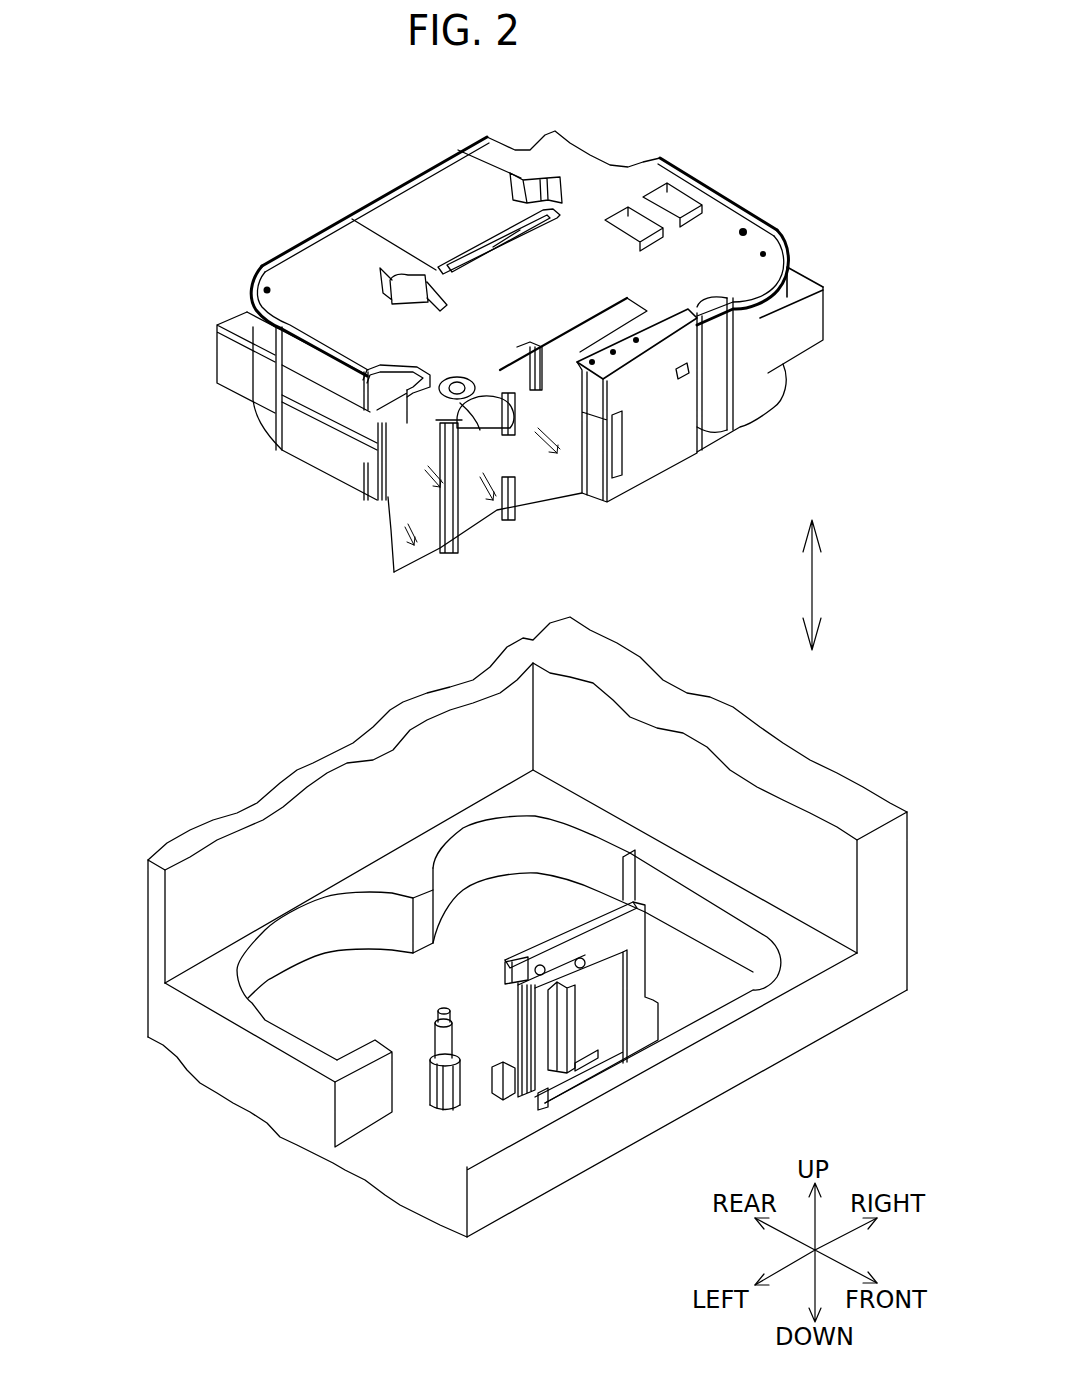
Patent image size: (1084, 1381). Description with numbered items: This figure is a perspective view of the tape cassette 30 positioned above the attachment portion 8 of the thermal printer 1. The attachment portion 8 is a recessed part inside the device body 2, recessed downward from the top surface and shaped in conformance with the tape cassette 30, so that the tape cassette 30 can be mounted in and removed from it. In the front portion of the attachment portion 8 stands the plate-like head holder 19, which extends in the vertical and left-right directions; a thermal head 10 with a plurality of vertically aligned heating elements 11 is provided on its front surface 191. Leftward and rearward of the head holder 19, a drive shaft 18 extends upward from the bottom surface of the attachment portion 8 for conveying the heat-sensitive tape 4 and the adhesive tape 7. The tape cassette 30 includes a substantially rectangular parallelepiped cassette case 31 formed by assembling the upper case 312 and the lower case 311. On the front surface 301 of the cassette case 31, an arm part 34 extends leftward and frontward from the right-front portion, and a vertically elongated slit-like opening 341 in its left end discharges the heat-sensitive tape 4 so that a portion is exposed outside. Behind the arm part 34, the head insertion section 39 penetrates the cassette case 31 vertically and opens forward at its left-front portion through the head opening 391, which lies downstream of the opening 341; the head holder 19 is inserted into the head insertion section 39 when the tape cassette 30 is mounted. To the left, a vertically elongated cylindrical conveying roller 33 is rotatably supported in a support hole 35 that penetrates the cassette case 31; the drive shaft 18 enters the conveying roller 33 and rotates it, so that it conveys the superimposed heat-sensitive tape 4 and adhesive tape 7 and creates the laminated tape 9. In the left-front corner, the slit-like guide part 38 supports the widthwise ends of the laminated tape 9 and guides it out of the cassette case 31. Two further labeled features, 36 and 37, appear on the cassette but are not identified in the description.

The thermal printer 1 is at (325, 730).
The device body 2 is at (683, 710).
The heat-sensitive tape 4 is at (530, 460).
The adhesive tape 7 is at (477, 415).
The attachment portion 8 is at (237, 903).
The laminated tape 9 is at (393, 557).
The thermal head 10 is at (592, 1007).
The heating elements 11 is at (518, 1023).
The drive shaft 18 is at (440, 1037).
The head holder 19 is at (637, 1028).
The front surface 191 is at (620, 940).
The tape cassette 30 is at (717, 190).
The cassette case 31 is at (308, 196).
The lower case 311 is at (265, 422).
The upper case 312 is at (333, 312).
The conveying roller 33 is at (455, 378).
The arm part 34 is at (657, 427).
The opening 341 is at (583, 440).
The support hole 35 is at (470, 396).
The clip 36 is at (538, 178).
The clip 37 is at (410, 280).
The guide part 38 is at (427, 517).
The head insertion section 39 is at (572, 360).
The head opening 391 is at (545, 508).
The front surface 301 is at (760, 350).